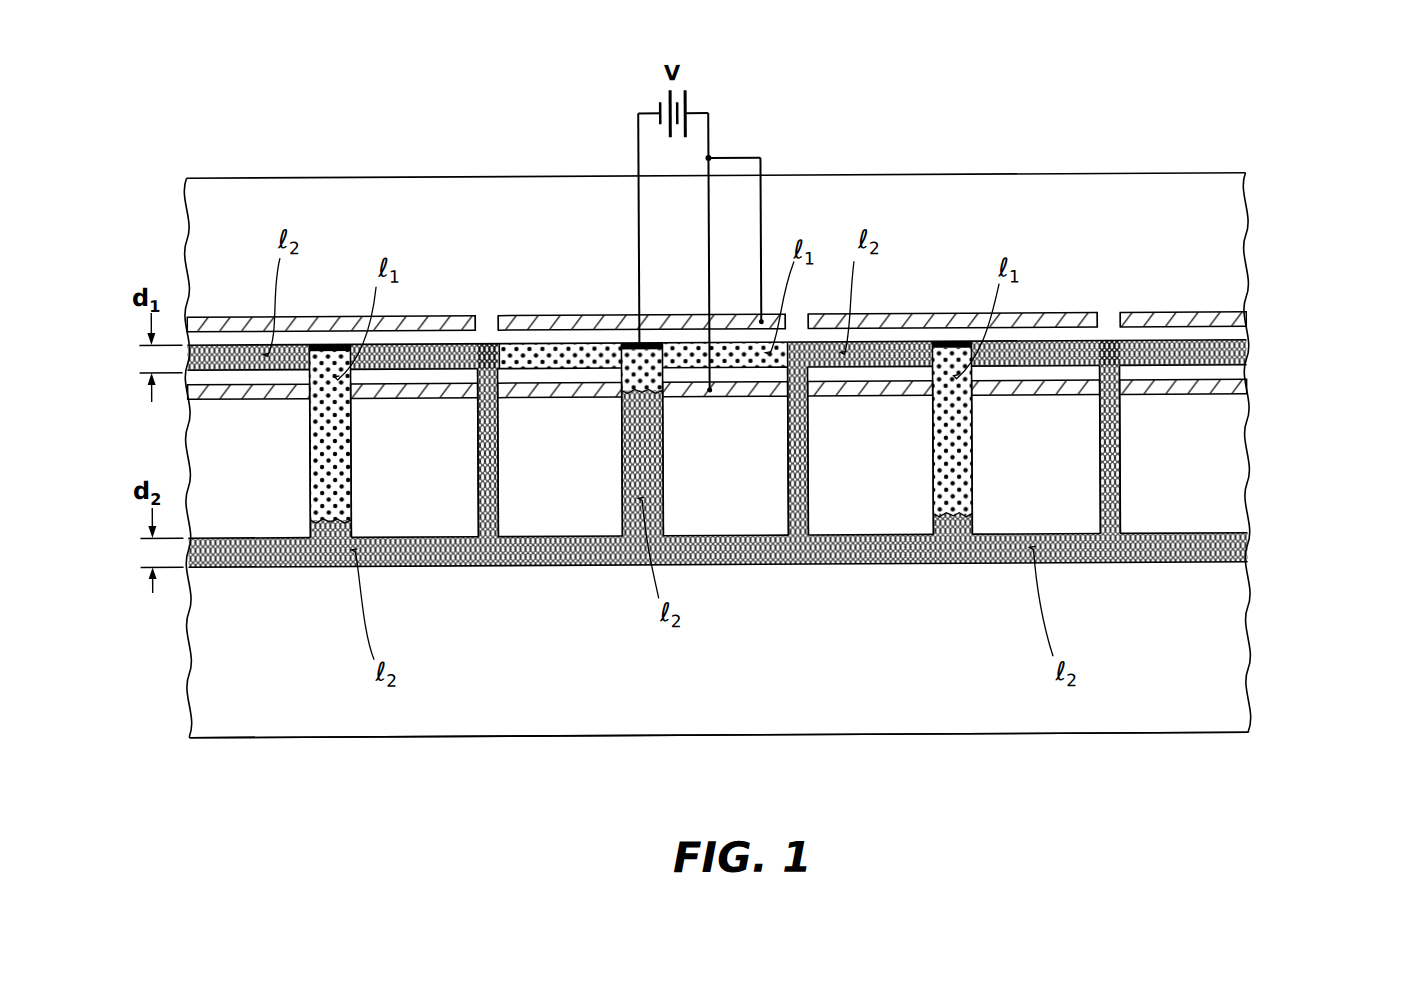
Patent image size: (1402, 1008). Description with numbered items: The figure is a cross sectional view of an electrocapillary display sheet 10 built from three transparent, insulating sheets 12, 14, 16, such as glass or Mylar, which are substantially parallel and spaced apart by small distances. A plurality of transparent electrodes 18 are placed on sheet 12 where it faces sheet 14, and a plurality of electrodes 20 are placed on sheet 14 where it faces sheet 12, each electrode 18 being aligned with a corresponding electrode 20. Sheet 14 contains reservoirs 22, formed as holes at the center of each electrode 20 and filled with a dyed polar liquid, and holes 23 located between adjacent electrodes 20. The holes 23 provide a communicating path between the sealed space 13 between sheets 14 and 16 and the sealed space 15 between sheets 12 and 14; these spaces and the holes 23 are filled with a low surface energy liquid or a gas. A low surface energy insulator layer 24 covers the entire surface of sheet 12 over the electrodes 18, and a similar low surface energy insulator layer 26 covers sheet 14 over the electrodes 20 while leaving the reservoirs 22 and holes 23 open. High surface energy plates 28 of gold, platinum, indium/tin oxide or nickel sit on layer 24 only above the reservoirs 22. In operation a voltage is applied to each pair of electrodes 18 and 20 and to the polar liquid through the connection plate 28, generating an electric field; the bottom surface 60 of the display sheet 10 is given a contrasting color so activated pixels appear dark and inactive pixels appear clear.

The electrocapillary display sheet 10 is at (1135, 53).
The transparent insulating sheet 12 is at (1230, 225).
The space 13 is at (1272, 358).
The transparent insulating sheet 14 is at (1232, 460).
The space 15 is at (1277, 551).
The transparent insulating sheet 16 is at (1232, 646).
The electrodes 18 is at (202, 316).
The electrodes 20 is at (248, 399).
The reservoirs 22 is at (329, 548).
The holes 23 is at (489, 548).
The low surface energy insulator layer 24 is at (486, 330).
The low surface energy insulator layer 26 is at (288, 379).
The high surface energy plates 28 is at (334, 341).
The bottom surface 60 is at (347, 735).